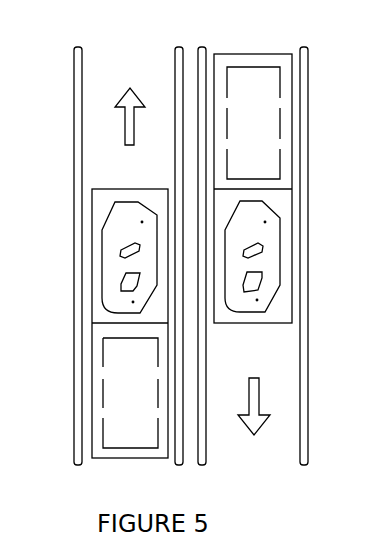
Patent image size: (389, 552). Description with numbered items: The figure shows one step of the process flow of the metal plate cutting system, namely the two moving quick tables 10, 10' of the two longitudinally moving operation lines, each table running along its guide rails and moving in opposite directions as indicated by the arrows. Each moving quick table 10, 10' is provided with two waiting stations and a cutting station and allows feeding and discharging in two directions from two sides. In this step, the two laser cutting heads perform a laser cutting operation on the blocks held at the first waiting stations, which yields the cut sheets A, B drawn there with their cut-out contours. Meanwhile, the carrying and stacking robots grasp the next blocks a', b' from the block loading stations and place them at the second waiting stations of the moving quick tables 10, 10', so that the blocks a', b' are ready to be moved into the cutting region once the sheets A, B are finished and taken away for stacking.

The moving quick table 10 is at (101, 246).
The moving quick table 10' is at (276, 244).
The sheet A is at (103, 231).
The sheet B is at (279, 234).
The block a' is at (88, 386).
The block b' is at (304, 123).